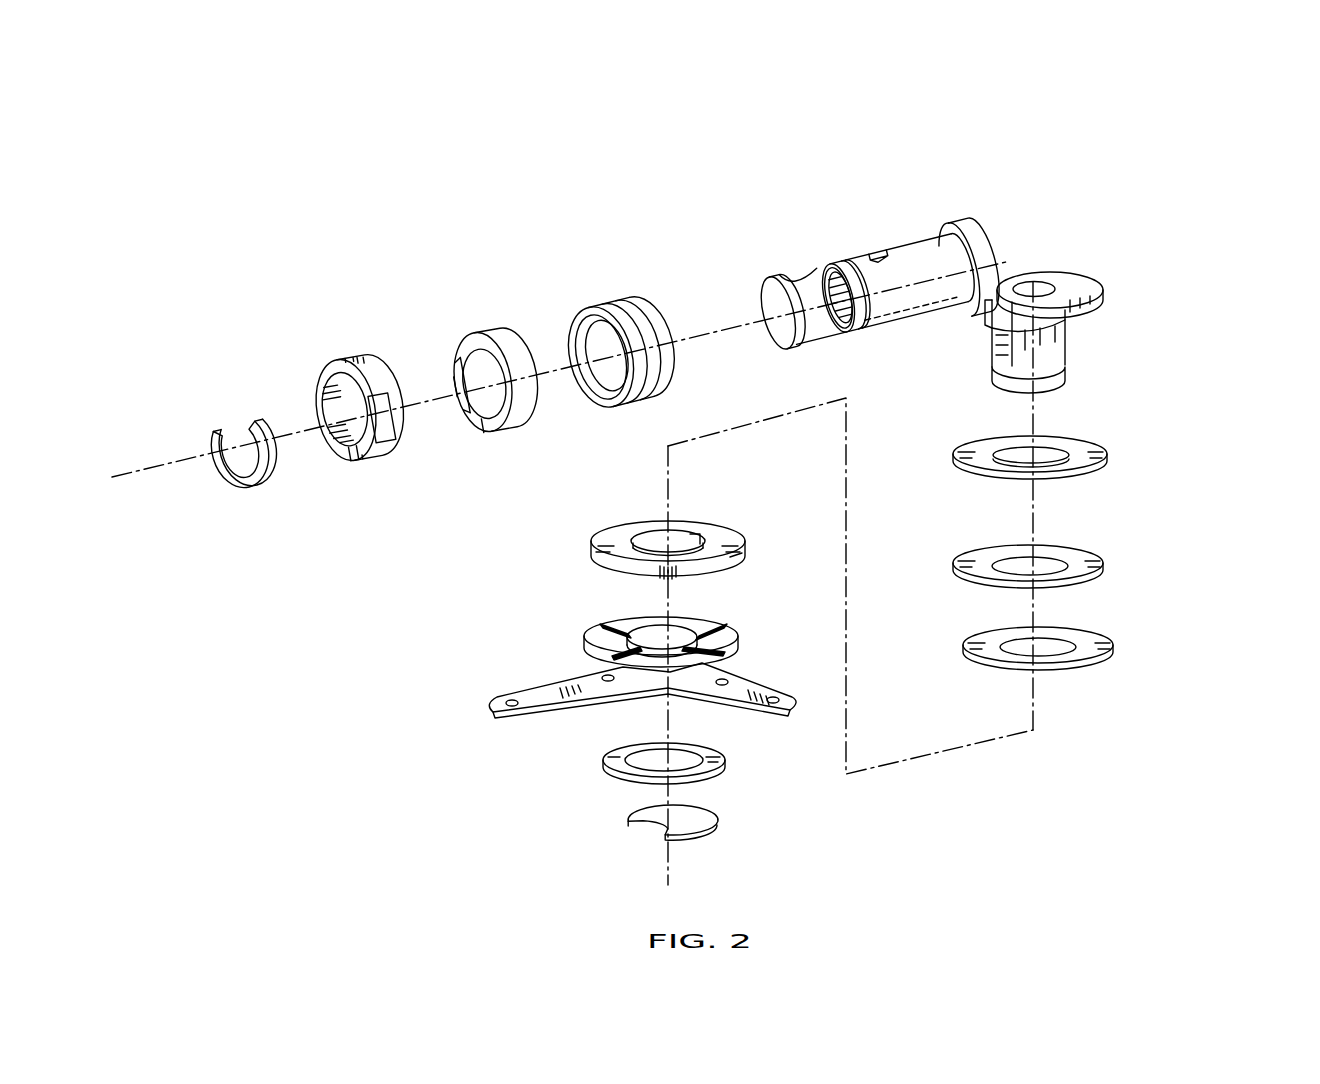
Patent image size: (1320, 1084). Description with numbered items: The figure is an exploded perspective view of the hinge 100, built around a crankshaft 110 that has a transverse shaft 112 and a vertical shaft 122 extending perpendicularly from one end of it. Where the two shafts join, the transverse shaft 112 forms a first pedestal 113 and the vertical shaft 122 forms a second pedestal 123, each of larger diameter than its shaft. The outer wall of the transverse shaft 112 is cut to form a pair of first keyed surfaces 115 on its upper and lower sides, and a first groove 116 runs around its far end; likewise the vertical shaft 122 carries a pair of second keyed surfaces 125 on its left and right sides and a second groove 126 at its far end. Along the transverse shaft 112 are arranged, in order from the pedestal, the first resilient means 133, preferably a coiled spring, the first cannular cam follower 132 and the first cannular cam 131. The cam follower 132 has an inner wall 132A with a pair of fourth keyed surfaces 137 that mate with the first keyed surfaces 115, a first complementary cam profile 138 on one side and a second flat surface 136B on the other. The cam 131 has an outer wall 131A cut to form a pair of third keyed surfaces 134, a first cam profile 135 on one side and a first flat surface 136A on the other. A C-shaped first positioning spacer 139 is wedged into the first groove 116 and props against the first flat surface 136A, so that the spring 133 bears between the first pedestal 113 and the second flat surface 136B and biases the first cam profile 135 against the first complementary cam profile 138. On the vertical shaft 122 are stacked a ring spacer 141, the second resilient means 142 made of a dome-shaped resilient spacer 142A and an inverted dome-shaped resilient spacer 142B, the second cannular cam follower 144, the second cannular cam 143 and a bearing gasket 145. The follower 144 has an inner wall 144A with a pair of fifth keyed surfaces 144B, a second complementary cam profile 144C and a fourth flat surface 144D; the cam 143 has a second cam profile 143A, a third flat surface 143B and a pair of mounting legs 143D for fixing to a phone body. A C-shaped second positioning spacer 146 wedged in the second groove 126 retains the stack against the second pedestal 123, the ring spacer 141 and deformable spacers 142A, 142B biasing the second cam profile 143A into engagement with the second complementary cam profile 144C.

The hinge 100 is at (290, 190).
The crankshaft 110 is at (976, 270).
The transverse shaft 112 is at (925, 240).
The first pedestal 113 is at (973, 218).
The first keyed surfaces 115 is at (895, 278).
The first groove 116 is at (875, 330).
The vertical shaft 122 is at (1065, 345).
The second pedestal 123 is at (1103, 300).
The second keyed surfaces 125 is at (1002, 343).
The second groove 126 is at (1065, 367).
The first cannular cam 131 is at (319, 418).
The outer wall 131A is at (372, 460).
The first cannular cam follower 132 is at (496, 387).
The inner wall 132A is at (460, 373).
The first resilient means 133 is at (638, 297).
The third keyed surfaces 134 is at (313, 398).
The first cam profile 135 is at (388, 377).
The first flat surface 136A is at (327, 373).
The second flat surface 136B is at (520, 353).
The fourth keyed surfaces 137 is at (453, 418).
The first complementary cam profile 138 is at (483, 427).
The first positioning spacer 139 is at (228, 473).
The ring spacer 141 is at (1103, 470).
The second resilient means 142 is at (1127, 607).
The resilient spacer 142A is at (1103, 572).
The resilient spacer 142B is at (1112, 643).
The second cannular cam 143 is at (634, 678).
The second cam profile 143A is at (698, 650).
The third flat surface 143B is at (738, 658).
The mounting legs 143D is at (805, 757).
The second cannular cam follower 144 is at (653, 508).
The inner wall 144A is at (648, 535).
The fifth keyed surfaces 144B is at (688, 535).
The second complementary cam profile 144C is at (738, 565).
The fourth flat surface 144D is at (712, 532).
The bearing gasket 145 is at (622, 760).
The second positioning spacer 146 is at (627, 818).